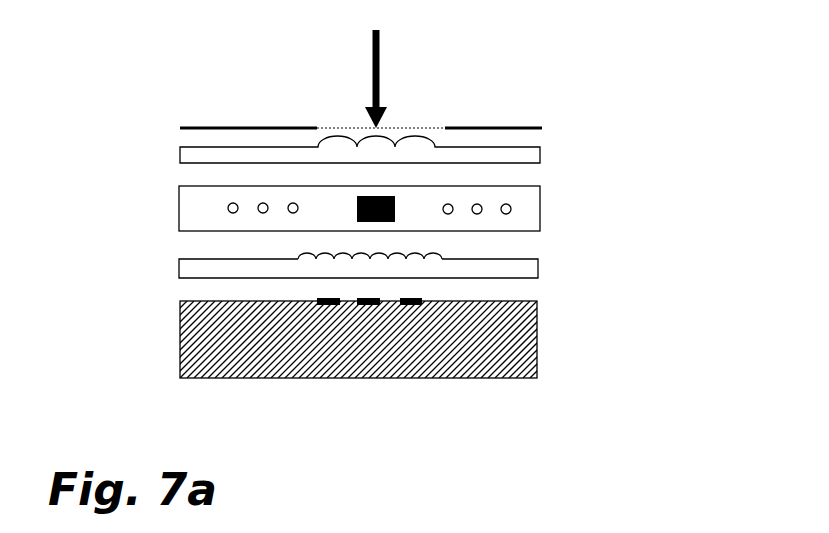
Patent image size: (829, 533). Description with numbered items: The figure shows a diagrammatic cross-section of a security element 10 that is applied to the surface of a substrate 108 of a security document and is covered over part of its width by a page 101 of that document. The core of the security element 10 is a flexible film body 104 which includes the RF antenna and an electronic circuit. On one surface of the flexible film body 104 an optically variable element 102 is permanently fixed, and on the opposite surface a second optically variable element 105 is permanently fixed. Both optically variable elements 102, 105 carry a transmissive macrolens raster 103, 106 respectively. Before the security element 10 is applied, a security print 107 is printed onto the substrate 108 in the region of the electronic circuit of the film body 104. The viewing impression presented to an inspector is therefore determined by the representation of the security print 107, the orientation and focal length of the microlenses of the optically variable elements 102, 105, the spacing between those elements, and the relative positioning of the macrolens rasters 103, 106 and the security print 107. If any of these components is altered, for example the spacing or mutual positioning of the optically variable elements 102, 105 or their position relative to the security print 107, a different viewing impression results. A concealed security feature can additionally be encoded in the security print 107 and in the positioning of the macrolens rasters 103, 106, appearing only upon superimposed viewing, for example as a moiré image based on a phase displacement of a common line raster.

The security element 10 is at (271, 80).
The page 101 is at (488, 119).
The optically variable element 102 is at (540, 155).
The transmissive macrolens raster 103 is at (389, 138).
The flexible film body 104 is at (540, 207).
The optically variable element 105 is at (538, 269).
The transmissive macrolens raster 106 is at (373, 254).
The security print 107 is at (370, 298).
The substrate 108 is at (537, 340).